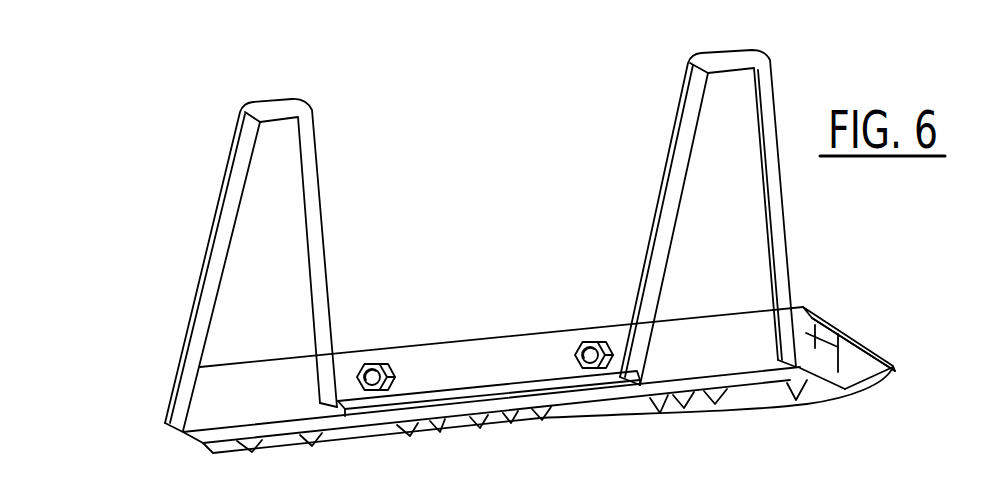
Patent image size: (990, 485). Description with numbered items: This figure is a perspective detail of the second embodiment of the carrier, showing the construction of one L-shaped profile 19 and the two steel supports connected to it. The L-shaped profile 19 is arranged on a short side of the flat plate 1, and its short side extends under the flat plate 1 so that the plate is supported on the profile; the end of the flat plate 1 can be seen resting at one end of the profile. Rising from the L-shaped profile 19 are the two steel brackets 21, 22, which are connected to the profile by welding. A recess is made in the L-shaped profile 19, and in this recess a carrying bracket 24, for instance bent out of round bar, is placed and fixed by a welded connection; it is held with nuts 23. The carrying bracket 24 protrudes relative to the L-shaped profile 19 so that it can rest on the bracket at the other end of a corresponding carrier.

The flat plate 1 is at (822, 350).
The L-shaped profile 19 is at (262, 387).
The steel bracket 21 is at (219, 227).
The steel bracket 22 is at (670, 202).
The nut 23 is at (378, 363).
The carrying bracket 24 is at (482, 398).